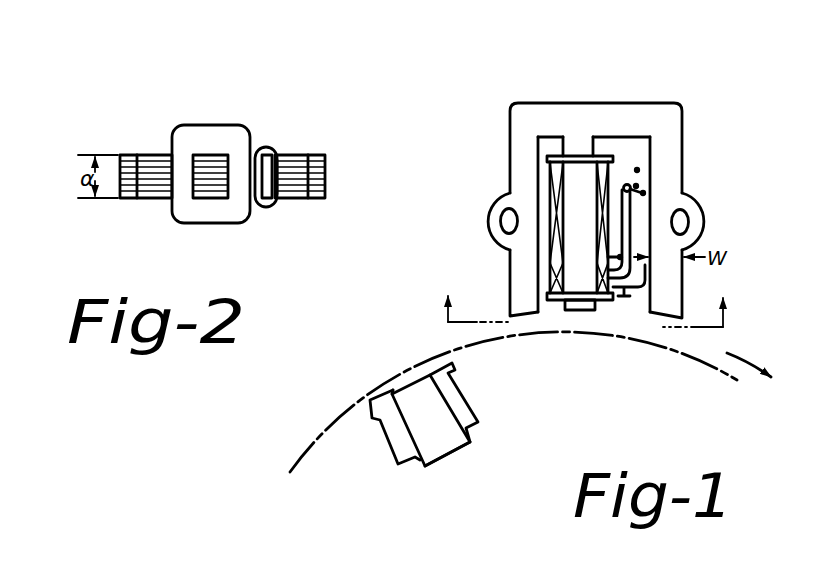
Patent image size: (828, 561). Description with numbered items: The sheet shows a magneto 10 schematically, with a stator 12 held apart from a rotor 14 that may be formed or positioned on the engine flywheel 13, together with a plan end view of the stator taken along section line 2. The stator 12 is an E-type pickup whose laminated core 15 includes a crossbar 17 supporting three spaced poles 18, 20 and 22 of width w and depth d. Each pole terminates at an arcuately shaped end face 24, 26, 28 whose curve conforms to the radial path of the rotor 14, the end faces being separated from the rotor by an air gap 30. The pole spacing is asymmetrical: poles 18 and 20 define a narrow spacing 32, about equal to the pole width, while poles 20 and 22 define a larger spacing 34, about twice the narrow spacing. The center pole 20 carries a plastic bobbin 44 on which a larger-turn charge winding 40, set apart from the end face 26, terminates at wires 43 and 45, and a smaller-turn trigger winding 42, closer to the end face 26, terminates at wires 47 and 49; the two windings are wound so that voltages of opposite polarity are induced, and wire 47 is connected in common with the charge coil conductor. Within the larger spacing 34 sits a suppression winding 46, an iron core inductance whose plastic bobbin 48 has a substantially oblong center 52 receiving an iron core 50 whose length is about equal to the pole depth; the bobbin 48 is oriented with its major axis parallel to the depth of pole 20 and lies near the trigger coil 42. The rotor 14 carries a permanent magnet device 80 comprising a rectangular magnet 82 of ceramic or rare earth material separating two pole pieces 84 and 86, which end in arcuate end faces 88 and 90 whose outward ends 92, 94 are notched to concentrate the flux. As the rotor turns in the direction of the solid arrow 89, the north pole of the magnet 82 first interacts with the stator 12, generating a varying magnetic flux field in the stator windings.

In FIG. 1, the magneto 10 is at (779, 233).
In FIG. 1, the stator 12 is at (509, 95).
In FIG. 1, the engine flywheel 13 is at (332, 444).
In FIG. 1, the rotor 14 is at (428, 418).
In FIG. 1, the core 15 is at (499, 190).
In FIG. 1, the crossbar 17 is at (560, 112).
In FIG. 1, the first pole 18 is at (520, 289).
In FIG. 1, the center pole 20 is at (578, 147).
In FIG. 1, the third pole 22 is at (630, 268).
In FIG. 1, the arcuate end face 24 is at (530, 317).
In FIG. 1, the arcuate end face 26 is at (581, 311).
In FIG. 1, the arcuate end face 28 is at (664, 319).
In FIG. 1, the air gap 30 is at (513, 323).
In FIG. 1, the narrow spacing 32 is at (552, 306).
In FIG. 1, the larger spacing 34 is at (633, 308).
In FIG. 1, the charge winding 40 is at (548, 177).
In FIG. 1, the trigger winding 42 is at (546, 277).
In FIG. 1, the wire 43 is at (636, 170).
In FIG. 2, the plastic bobbin 44 is at (208, 125).
In FIG. 1, the plastic bobbin 44 is at (553, 153).
In FIG. 1, the wire 45 is at (631, 186).
In FIG. 2, the suppression winding 46 is at (284, 140).
In FIG. 1, the suppression winding 46 is at (618, 303).
In FIG. 1, the wire 47 is at (627, 253).
In FIG. 2, the plastic bobbin 48 is at (268, 147).
In FIG. 1, the wire 49 is at (645, 192).
In FIG. 2, the iron core 50 is at (263, 190).
In FIG. 2, the oblong center 52 is at (270, 207).
In FIG. 1, the permanent magnet device 80 is at (459, 456).
In FIG. 1, the rectangular magnet 82 is at (440, 444).
In FIG. 1, the pole piece 84 is at (473, 416).
In FIG. 1, the pole piece 86 is at (390, 444).
In FIG. 1, the arcuate end face 88 is at (421, 362).
In FIG. 1, the solid arrow 89 is at (730, 353).
In FIG. 1, the arcuate end face 90 is at (381, 387).
In FIG. 1, the outward end 92 is at (453, 362).
In FIG. 1, the outward end 94 is at (362, 400).
In FIG. 1, the section line 2- 2 is at (584, 300).